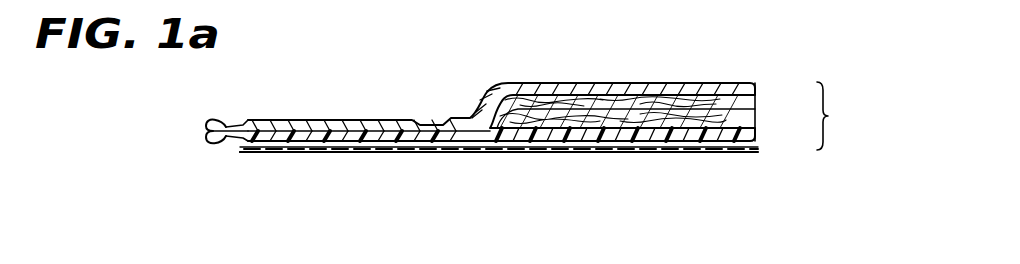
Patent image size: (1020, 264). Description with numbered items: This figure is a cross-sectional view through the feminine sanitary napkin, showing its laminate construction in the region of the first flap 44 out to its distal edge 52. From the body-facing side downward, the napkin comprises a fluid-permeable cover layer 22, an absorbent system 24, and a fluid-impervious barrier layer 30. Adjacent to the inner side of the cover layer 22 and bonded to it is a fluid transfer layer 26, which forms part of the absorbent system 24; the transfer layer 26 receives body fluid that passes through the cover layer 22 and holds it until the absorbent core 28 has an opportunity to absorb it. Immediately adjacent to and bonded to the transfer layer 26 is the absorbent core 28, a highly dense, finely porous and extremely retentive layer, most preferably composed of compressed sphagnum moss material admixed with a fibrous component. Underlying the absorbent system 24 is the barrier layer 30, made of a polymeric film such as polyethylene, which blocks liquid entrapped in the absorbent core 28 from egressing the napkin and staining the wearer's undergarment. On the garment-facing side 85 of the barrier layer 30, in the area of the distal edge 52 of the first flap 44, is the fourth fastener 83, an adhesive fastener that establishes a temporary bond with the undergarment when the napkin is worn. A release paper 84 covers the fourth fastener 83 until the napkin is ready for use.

The cover layer 22 is at (756, 88).
The absorbent system 24 is at (836, 116).
The fluid transfer layer 26 is at (757, 105).
The absorbent core 28 is at (757, 118).
The barrier layer 30 is at (760, 151).
The first flap 44 is at (325, 83).
The distal edge 52 is at (204, 129).
The fourth fastener 83 is at (280, 155).
The release paper 84 is at (438, 154).
The garment-facing side 85 is at (373, 153).